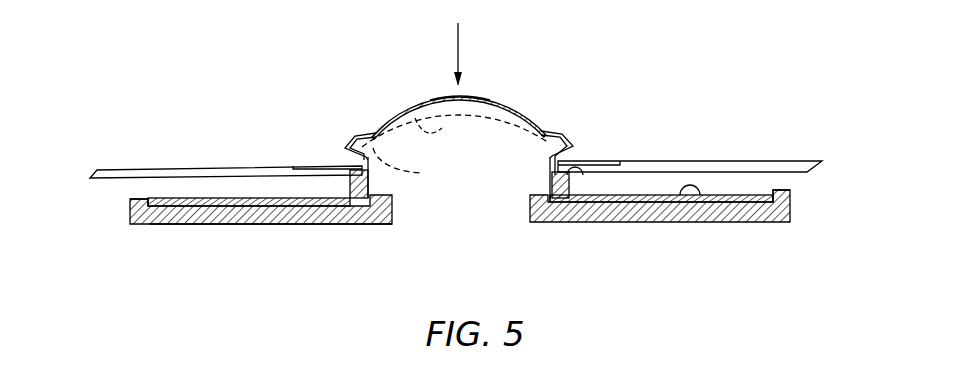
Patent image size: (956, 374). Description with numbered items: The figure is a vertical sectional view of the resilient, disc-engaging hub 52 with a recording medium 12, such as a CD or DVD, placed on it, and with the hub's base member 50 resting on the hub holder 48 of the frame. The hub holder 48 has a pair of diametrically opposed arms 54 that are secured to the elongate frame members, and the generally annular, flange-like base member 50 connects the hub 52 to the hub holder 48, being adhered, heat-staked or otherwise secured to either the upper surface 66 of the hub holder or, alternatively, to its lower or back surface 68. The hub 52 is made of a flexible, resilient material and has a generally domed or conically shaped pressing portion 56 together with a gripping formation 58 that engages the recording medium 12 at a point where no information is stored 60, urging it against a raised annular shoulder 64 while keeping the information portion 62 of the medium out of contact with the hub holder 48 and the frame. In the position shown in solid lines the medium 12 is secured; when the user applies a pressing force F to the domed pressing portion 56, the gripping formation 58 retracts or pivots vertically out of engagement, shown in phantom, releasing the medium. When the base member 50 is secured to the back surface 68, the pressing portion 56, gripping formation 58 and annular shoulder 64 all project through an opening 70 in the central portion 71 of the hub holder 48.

The recording medium 12 is at (220, 167).
The hub holder 48 is at (330, 225).
The base member 50 is at (692, 192).
The hub 52 is at (516, 103).
The arms 54 is at (233, 218).
The pressing portion 56 is at (450, 95).
The gripping formation 58 is at (577, 137).
The point where no information is stored 60 is at (590, 161).
The information portion 62 is at (693, 161).
The raised annular shoulder 64 is at (580, 172).
The upper surface 66 is at (150, 198).
The lower or back surface 68 is at (152, 225).
The opening 70 is at (392, 208).
The central portion 71 is at (383, 225).
The pressing force F is at (459, 43).